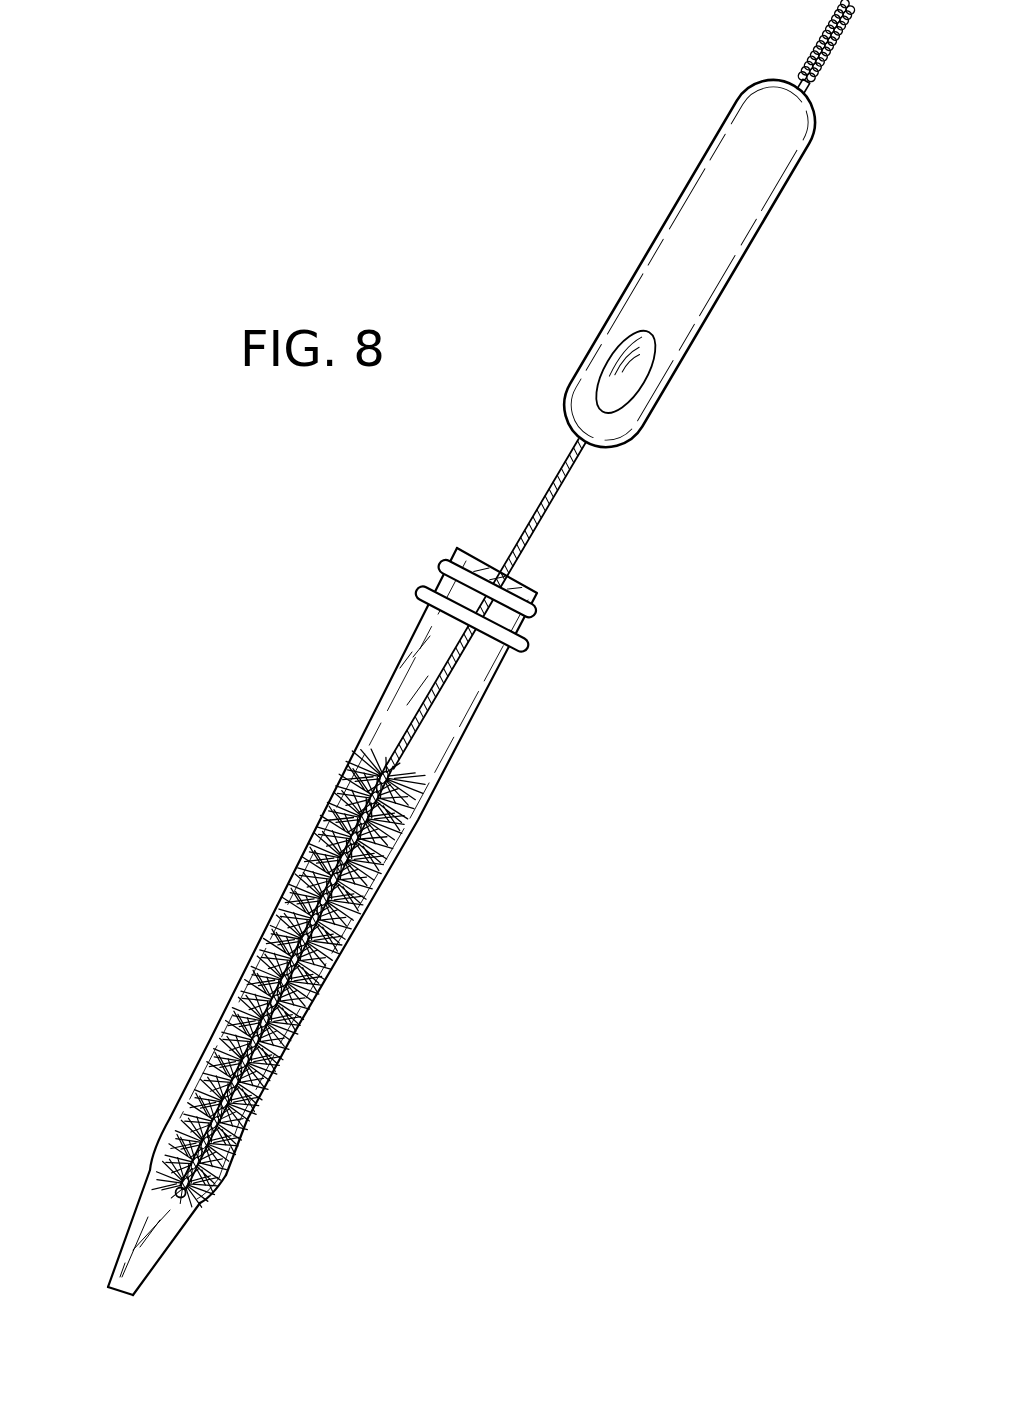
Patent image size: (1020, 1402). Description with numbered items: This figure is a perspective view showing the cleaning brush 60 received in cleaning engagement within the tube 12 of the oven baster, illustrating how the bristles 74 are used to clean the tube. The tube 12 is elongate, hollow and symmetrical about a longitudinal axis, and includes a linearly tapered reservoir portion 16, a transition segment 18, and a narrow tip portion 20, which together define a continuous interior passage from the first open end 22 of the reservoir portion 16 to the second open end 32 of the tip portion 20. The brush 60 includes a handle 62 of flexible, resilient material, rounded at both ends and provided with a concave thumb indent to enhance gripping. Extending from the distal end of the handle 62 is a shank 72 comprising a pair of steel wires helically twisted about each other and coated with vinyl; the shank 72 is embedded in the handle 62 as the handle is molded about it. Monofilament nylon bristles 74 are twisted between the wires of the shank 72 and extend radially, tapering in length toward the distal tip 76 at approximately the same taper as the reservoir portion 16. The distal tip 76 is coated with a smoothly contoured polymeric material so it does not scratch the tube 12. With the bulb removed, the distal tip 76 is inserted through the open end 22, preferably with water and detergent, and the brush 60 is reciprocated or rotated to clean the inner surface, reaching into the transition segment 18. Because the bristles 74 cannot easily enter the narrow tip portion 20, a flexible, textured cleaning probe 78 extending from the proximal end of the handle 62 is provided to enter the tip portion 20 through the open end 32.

The tube 12 is at (293, 938).
The reservoir portion 16 is at (248, 963).
The transition segment 18 is at (200, 1205).
The tip portion 20 is at (157, 1257).
The first open end 22 is at (537, 588).
The second open end 32 is at (108, 1288).
The cleaning brush 60 is at (460, 610).
The handle 62 is at (747, 255).
The shank 72 is at (528, 522).
The bristles 74 is at (335, 962).
The distal tip 76 is at (173, 1191).
The cleaning probe 78 is at (796, 32).